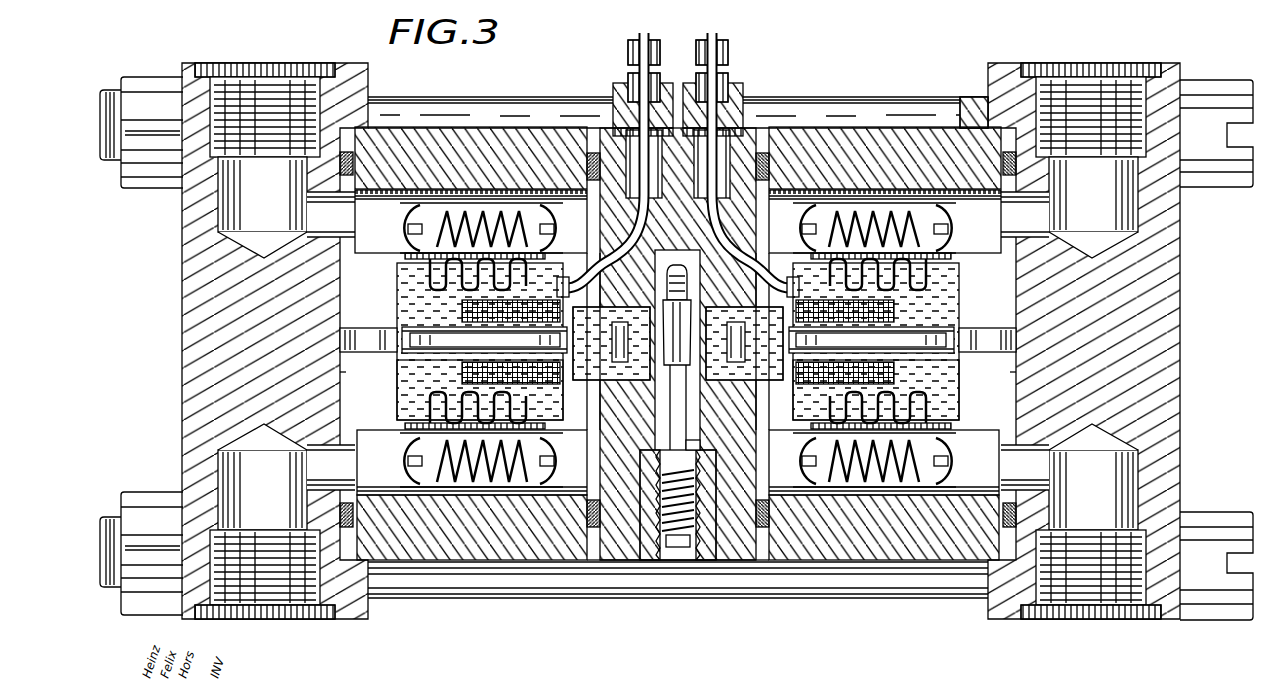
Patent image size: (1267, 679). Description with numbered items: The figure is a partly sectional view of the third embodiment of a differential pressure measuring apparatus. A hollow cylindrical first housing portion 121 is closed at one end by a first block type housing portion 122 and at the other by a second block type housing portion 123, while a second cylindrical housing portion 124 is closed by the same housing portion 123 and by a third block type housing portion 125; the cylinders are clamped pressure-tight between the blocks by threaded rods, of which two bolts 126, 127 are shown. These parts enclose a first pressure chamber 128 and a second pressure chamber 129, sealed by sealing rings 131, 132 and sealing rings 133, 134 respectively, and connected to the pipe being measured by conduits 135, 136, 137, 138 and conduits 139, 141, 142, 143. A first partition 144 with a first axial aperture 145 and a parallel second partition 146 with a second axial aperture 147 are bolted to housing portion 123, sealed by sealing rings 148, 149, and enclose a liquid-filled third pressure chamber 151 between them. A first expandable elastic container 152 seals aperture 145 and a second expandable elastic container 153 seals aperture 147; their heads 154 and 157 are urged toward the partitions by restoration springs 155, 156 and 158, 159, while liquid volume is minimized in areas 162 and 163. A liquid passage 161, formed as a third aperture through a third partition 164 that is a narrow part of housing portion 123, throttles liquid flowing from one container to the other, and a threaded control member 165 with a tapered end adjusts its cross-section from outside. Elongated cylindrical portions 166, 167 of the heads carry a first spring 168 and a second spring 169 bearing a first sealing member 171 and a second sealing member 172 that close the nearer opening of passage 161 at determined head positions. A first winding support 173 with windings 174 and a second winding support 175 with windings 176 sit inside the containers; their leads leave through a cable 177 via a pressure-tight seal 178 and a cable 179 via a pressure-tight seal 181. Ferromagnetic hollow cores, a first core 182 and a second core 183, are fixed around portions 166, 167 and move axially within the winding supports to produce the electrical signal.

The first housing portion 121 is at (962, 110).
The first block type housing portion 122 is at (1180, 304).
The second block type housing portion 123 is at (628, 562).
The second substantially cylindrical housing portion 124 is at (402, 128).
The third block type housing portion 125 is at (183, 302).
The bolt 126 is at (855, 128).
The bolt 127 is at (863, 598).
The first pressure chamber 128 is at (1016, 410).
The second pressure chamber 129 is at (340, 378).
The sealing ring 131 is at (1010, 530).
The sealing ring 132 is at (764, 562).
The sealing ring 133 is at (590, 562).
The sealing ring 134 is at (354, 512).
The conduit 135 is at (1090, 88).
The conduit 136 is at (1055, 208).
The conduit 137 is at (1080, 615).
The conduit 138 is at (1052, 478).
The conduit 139 is at (280, 88).
The conduit 141 is at (308, 194).
The conduit 142 is at (316, 590).
The conduit 143 is at (308, 472).
The first partition 144 is at (820, 192).
The first axial aperture 145 is at (738, 198).
The second partition 146 is at (586, 166).
The second axial aperture 147 is at (618, 200).
The sealing ring 148 is at (728, 462).
The sealing ring 149 is at (586, 498).
The third pressure chamber 151 is at (652, 385).
The first expandable elastic container 152 is at (936, 205).
The second expandable elastic container 153 is at (428, 192).
The head 154 is at (948, 430).
The restoration spring 155 is at (872, 205).
The restoration spring 156 is at (866, 490).
The head 157 is at (405, 260).
The restoration spring 158 is at (493, 205).
The restoration spring 159 is at (488, 490).
The liquid passage 161 is at (666, 300).
The area 162 is at (948, 350).
The area 163 is at (405, 412).
The third partition 164 is at (737, 380).
The threaded control member 165 is at (658, 484).
The elongated cylindrical portion 166 is at (948, 322).
The elongated cylindrical portion 167 is at (398, 336).
The first spring 168 is at (764, 372).
The second spring 169 is at (608, 376).
The first sealing member 171 is at (738, 322).
The second sealing member 172 is at (667, 270).
The first winding support 173 is at (702, 444).
The electrical windings 174 is at (915, 400).
The second winding support 175 is at (662, 472).
The electrical windings 176 is at (470, 300).
The cable 177 is at (728, 78).
The pressure-tight seal 178 is at (764, 112).
The cable 179 is at (630, 78).
The pressure-tight seal 181 is at (614, 112).
The first core 182 is at (940, 286).
The second core 183 is at (400, 368).